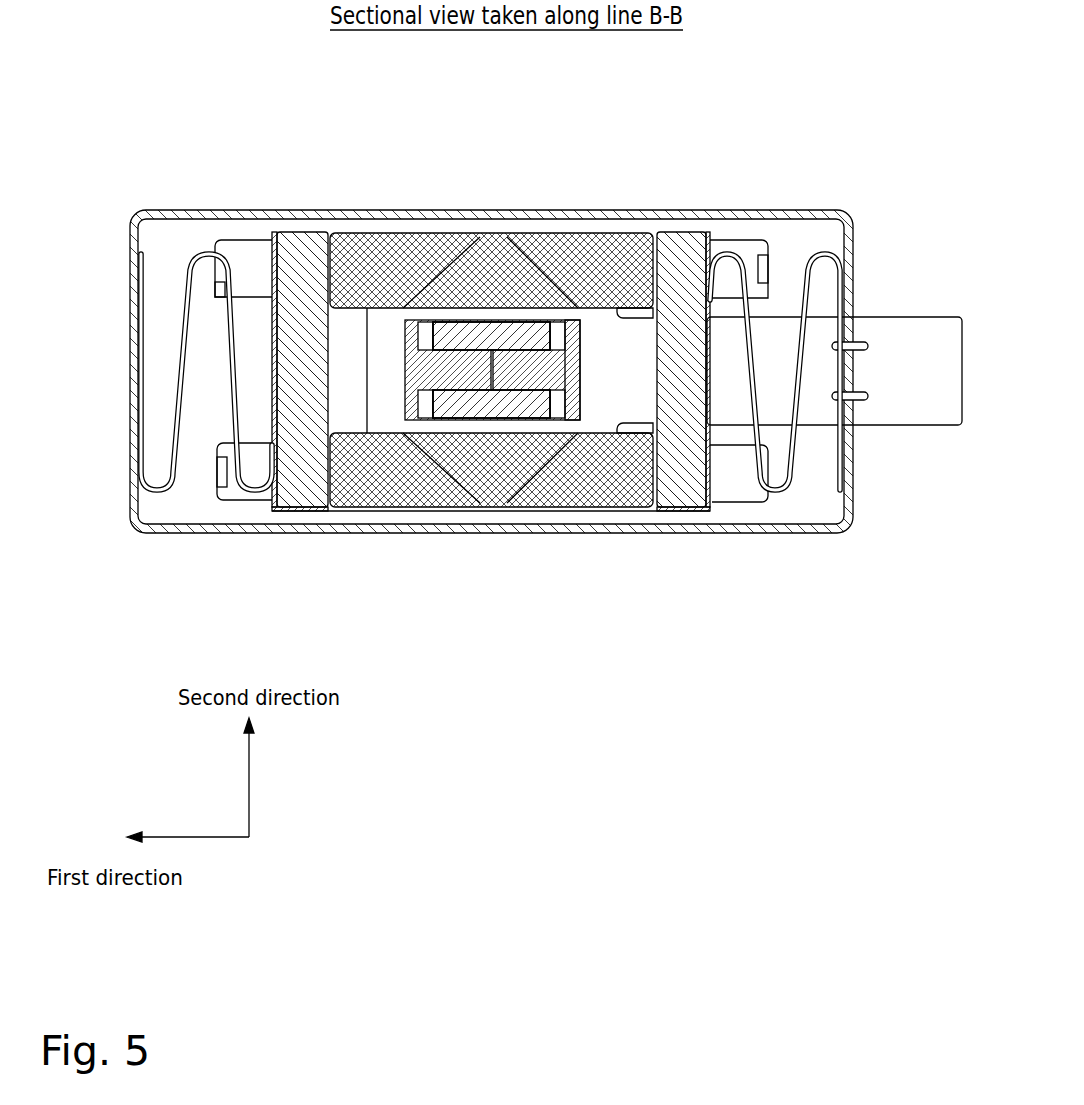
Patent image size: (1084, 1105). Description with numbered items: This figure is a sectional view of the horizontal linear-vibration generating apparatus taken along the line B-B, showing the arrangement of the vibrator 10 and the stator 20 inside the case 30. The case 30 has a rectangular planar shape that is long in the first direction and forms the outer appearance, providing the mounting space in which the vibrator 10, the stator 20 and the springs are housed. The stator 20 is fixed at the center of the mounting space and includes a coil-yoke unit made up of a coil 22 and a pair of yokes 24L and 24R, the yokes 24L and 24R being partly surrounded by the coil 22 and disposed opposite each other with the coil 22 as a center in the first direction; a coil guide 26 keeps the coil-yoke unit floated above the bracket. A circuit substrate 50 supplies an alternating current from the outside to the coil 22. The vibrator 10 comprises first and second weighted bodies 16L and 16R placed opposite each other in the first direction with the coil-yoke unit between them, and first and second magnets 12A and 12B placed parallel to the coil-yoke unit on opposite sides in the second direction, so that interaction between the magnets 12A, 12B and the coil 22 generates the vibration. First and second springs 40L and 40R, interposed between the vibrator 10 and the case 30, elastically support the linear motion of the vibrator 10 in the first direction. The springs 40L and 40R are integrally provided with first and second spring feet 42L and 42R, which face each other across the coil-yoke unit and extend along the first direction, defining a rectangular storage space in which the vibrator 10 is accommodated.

The vibrator 10 is at (273, 128).
The first magnet 12A is at (518, 258).
The second magnet 12B is at (425, 441).
The first weighted body 16L is at (300, 250).
The second weighted body 16R is at (675, 252).
The stator 20 is at (658, 597).
The coil 22 is at (488, 403).
The yoke 24L is at (455, 376).
The yoke 24R is at (565, 363).
The coil guide 26 is at (558, 412).
The case 30 is at (857, 217).
The first spring 40L is at (162, 490).
The second spring 40R is at (787, 493).
The first spring foot 42L is at (277, 222).
The second spring foot 42R is at (675, 510).
The circuit substrate 50 is at (930, 333).